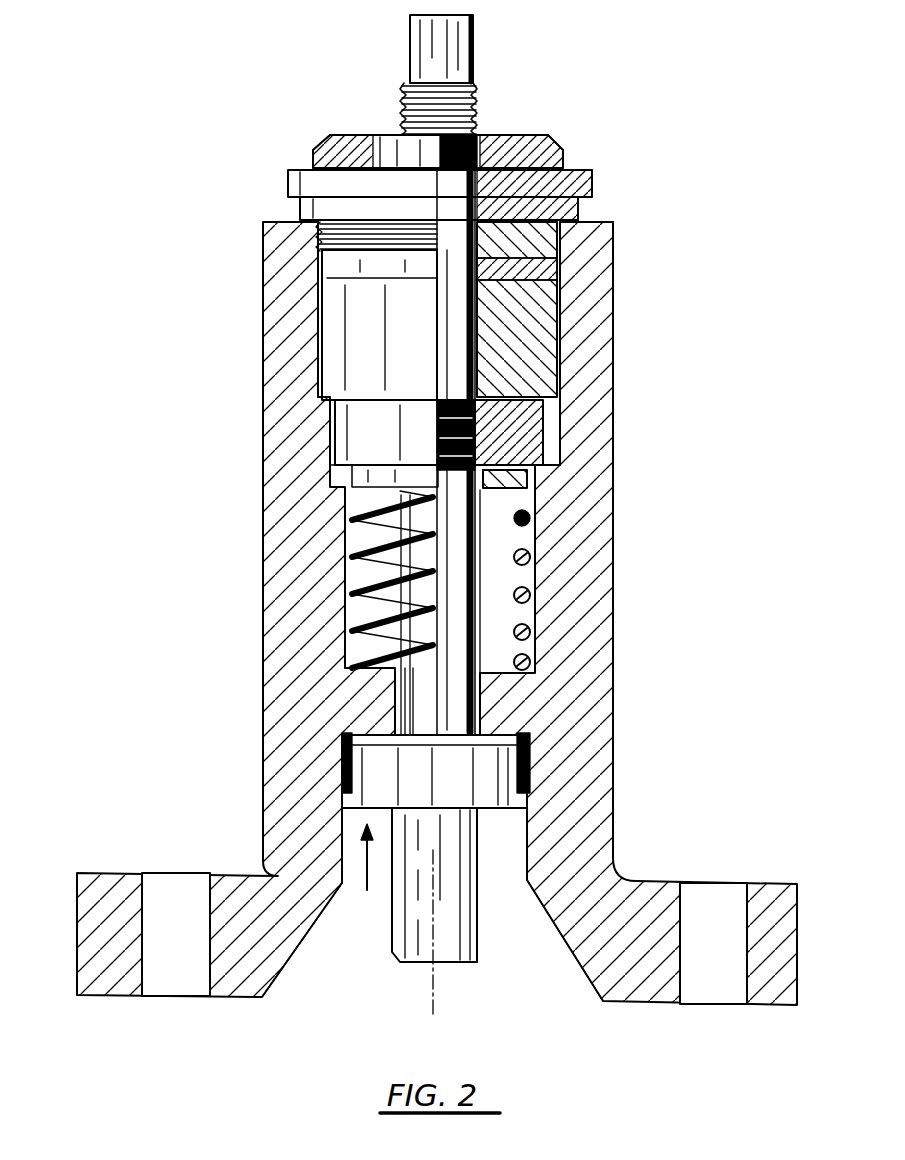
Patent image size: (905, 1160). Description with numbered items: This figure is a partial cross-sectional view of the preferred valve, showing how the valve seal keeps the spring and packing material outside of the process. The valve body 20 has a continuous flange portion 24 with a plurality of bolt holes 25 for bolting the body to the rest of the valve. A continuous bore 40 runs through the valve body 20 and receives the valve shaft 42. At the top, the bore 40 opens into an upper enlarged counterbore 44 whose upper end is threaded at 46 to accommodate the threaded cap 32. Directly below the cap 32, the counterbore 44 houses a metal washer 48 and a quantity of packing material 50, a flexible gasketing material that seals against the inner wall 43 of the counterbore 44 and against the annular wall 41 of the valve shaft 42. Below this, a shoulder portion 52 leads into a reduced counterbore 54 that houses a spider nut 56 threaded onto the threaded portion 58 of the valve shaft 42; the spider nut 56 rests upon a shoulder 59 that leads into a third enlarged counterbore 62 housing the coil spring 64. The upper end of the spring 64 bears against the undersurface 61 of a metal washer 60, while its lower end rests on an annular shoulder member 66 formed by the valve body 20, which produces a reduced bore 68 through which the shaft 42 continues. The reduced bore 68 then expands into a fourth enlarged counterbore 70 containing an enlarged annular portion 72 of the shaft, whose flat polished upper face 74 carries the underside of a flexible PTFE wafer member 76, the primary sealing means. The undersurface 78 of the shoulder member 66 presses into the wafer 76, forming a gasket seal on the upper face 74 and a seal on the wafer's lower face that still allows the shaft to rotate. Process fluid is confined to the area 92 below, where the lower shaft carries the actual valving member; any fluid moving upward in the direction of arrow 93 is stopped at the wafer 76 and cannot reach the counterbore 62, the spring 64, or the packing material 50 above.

The valve body 20 is at (615, 440).
The continuous flange portion 24 is at (655, 883).
The bolt holes 25 is at (723, 890).
The threaded cap 32 is at (578, 206).
The bore 40 is at (356, 832).
The annular wall 41 is at (577, 170).
The valve shaft 42 is at (458, 832).
The inner wall 43 is at (318, 372).
The upper enlarged counterbore 44 is at (318, 285).
The threaded portion of counterbore 46 is at (315, 243).
The metal washer 48 is at (548, 262).
The packing material 50 is at (567, 335).
The shoulder portion 52 is at (338, 432).
The reduced counterbore 54 is at (345, 463).
The spider nut 56 is at (545, 462).
The threaded portion of valve shaft 58 is at (480, 492).
The shoulder 59 is at (350, 487).
The metal washer 60 is at (350, 525).
The undersurface of metal washer 61 is at (345, 565).
The third enlarged counterbore 62 is at (526, 576).
The coil spring 64 is at (365, 640).
The annular shoulder member 66 is at (487, 668).
The reduced bore 68 is at (480, 705).
The fourth enlarged counterbore 70 is at (515, 860).
The enlarged annular portion 72 is at (345, 770).
The flat polished upper face 74 is at (530, 740).
The flexible wafer member 76 is at (370, 757).
The undersurface of shoulder member 78 is at (342, 757).
The area 92 is at (548, 990).
The arrow 93 is at (368, 868).